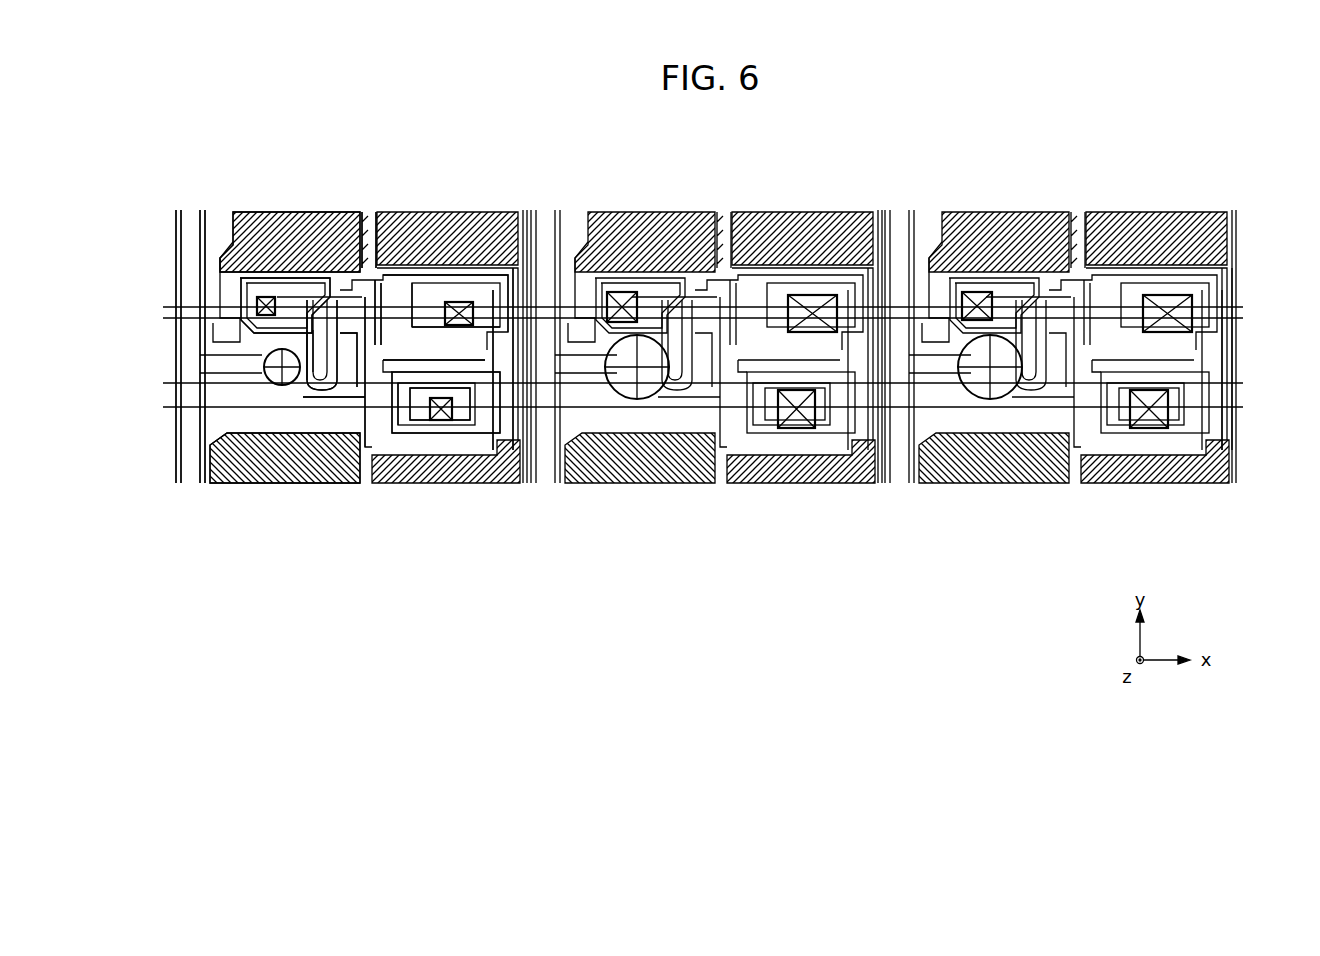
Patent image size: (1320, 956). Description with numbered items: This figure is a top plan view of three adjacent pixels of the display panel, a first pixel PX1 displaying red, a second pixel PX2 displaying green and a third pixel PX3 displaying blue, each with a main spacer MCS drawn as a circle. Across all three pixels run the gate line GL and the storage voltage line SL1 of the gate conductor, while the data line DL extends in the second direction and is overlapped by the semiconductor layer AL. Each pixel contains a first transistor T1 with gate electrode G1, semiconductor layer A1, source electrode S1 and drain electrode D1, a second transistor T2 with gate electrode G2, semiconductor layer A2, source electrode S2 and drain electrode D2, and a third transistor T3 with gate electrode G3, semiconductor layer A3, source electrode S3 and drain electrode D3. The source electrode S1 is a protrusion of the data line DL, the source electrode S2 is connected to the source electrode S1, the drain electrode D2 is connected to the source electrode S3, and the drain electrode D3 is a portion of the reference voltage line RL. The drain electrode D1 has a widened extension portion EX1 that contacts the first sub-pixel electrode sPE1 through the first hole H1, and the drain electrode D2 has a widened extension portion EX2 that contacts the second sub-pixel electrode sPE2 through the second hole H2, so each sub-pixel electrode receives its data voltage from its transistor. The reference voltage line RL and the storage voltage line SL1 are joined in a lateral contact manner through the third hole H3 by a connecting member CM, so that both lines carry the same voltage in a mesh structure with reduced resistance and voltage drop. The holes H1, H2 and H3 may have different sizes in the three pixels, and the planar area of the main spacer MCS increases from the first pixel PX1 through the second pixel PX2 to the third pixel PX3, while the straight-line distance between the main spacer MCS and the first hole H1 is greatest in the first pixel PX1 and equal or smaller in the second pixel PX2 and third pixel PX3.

The first sub-pixel electrode sPE1 is at (243, 243).
The first hole H1 is at (977, 305).
The extension portion EX1 is at (278, 298).
The reference voltage line RL is at (365, 325).
The source electrode S3 is at (383, 327).
The semiconductor layer A3 is at (407, 317).
The drain electrode D3 is at (413, 327).
The gate electrode G3 is at (440, 327).
The third hole H3 is at (1167, 312).
The third transistor T3 is at (382, 174).
The semiconductor layer AL is at (200, 250).
The data line DL is at (201, 280).
The main spacer MCS is at (990, 400).
The gate line GL is at (160, 385).
The connecting member CM is at (1240, 290).
The storage voltage line SL1 is at (1252, 306).
The second sub-pixel electrode sPE2 is at (215, 437).
The gate electrode G1 is at (260, 393).
The source electrode S1 is at (285, 390).
The semiconductor layer A1 is at (303, 387).
The drain electrode D1 is at (320, 390).
The first transistor T1 is at (215, 528).
The source electrode S2 is at (353, 380).
The semiconductor layer A2 is at (362, 373).
The drain electrode D2 is at (375, 403).
The gate electrode G2 is at (393, 407).
The second transistor T2 is at (332, 528).
The second hole H2 is at (1155, 420).
The extension portion EX2 is at (480, 395).
The first pixel PX1 is at (321, 550).
The second pixel PX2 is at (711, 550).
The third pixel PX3 is at (1061, 550).